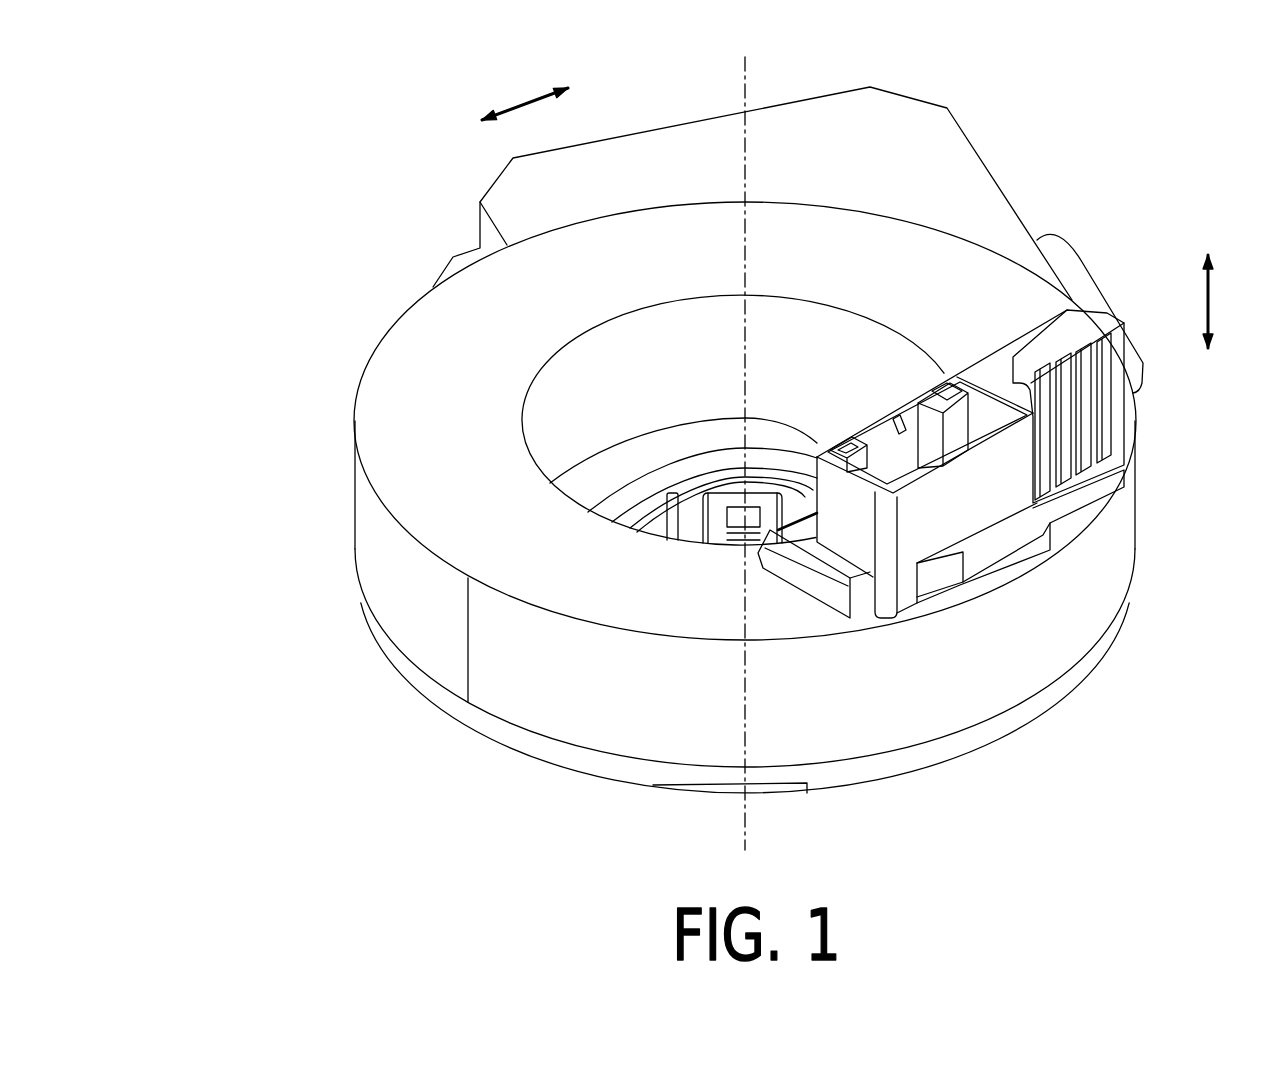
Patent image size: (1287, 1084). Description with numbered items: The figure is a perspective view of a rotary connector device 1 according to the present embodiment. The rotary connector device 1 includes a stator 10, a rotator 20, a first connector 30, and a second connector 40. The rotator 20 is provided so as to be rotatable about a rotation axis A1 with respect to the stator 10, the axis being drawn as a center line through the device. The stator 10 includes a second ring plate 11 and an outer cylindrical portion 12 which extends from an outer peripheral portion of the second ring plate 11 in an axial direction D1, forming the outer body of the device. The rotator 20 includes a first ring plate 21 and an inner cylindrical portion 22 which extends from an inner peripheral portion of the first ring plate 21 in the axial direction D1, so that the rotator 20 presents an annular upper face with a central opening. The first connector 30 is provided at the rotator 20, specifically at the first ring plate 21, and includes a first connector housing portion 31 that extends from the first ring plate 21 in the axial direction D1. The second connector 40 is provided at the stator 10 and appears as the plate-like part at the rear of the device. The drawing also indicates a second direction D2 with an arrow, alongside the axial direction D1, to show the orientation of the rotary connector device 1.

The rotary connector device 1 is at (1133, 163).
The stator 10 is at (347, 480).
The second ring plate 11 is at (457, 723).
The outer cylindrical portion 12 is at (372, 540).
The rotator 20 is at (280, 242).
The first ring plate 21 is at (407, 352).
The inner cylindrical portion 22 is at (588, 377).
The first connector 30 is at (1008, 328).
The first connector housing portion 31 is at (987, 507).
The second connector 40 is at (472, 185).
The rotation axis A1 is at (747, 61).
The axial direction D1 is at (1213, 300).
The radial direction D2 is at (522, 102).